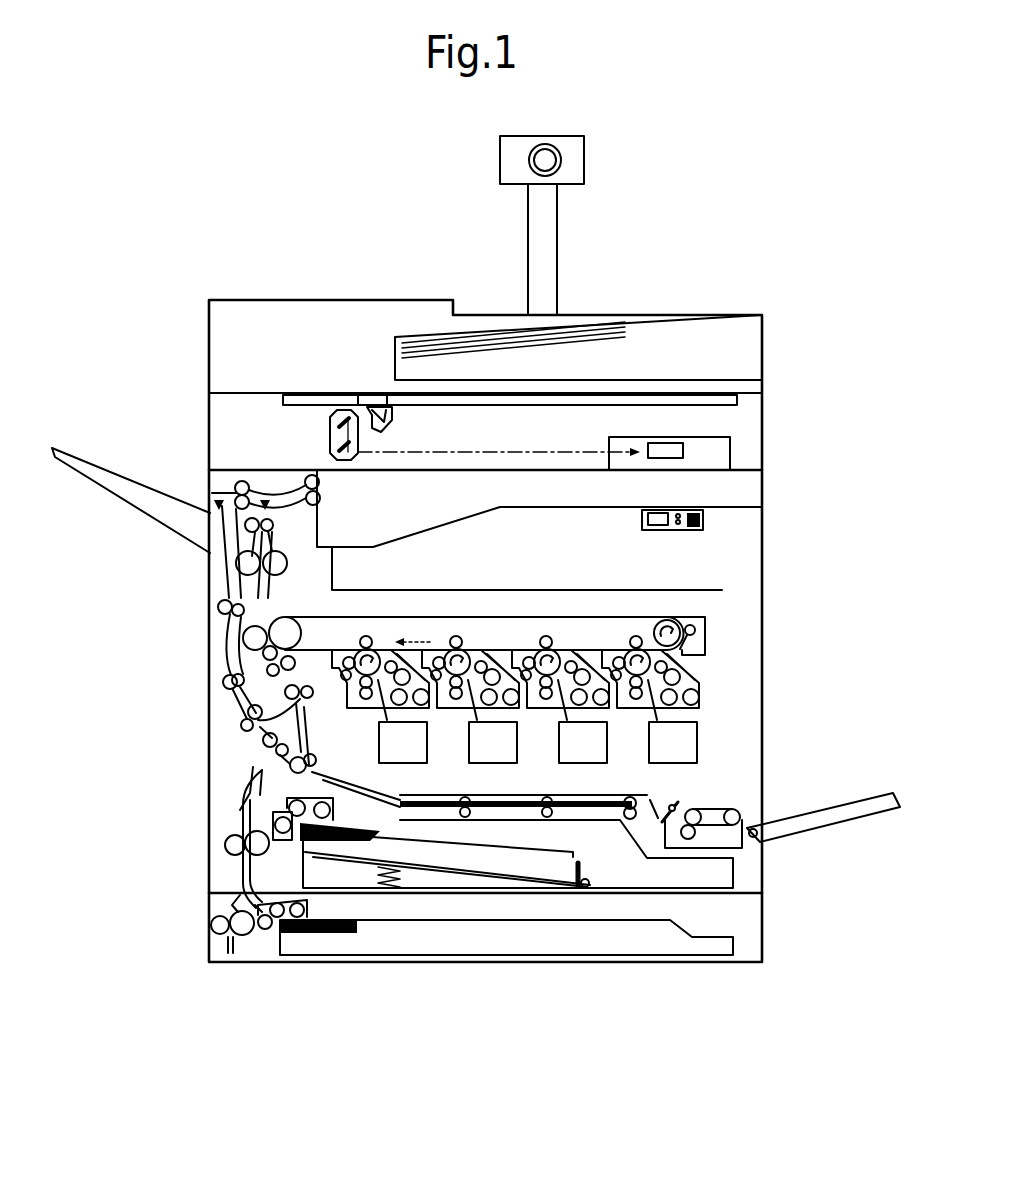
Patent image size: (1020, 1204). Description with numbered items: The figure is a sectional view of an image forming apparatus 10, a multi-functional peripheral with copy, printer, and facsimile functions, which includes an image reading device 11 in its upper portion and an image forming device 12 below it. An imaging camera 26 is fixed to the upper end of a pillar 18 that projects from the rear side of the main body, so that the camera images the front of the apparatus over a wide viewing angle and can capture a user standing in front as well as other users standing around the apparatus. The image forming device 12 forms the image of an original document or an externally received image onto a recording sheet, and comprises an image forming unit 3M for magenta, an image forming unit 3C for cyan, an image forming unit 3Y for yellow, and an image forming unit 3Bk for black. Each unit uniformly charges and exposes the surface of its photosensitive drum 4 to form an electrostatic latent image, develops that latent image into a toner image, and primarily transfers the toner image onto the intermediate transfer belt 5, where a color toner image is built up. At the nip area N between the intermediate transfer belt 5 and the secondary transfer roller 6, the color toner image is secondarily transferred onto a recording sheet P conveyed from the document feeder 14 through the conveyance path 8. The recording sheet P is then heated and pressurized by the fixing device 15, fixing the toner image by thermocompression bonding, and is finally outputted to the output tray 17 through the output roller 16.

The image forming apparatus 10 is at (348, 169).
The imaging camera 26 is at (586, 153).
The pillar 18 is at (553, 203).
The image reading device 11 is at (763, 368).
The output tray 17 is at (396, 546).
The output roller 16 is at (308, 484).
The fixing device 15 is at (254, 566).
The nip area N is at (256, 606).
The secondary transfer roller 6 is at (246, 640).
The conveyance path 8 is at (254, 767).
The image forming device 12 is at (720, 693).
The intermediate transfer belt 5 is at (644, 616).
The image forming unit for black 3Bk is at (370, 626).
The image forming unit for yellow 3Y is at (449, 628).
The image forming unit for cyan 3C is at (526, 639).
The image forming unit for magenta 3M is at (620, 639).
The photosensitive drum 4 is at (445, 650).
The recording sheet P is at (563, 842).
The document feeder 14 is at (725, 971).